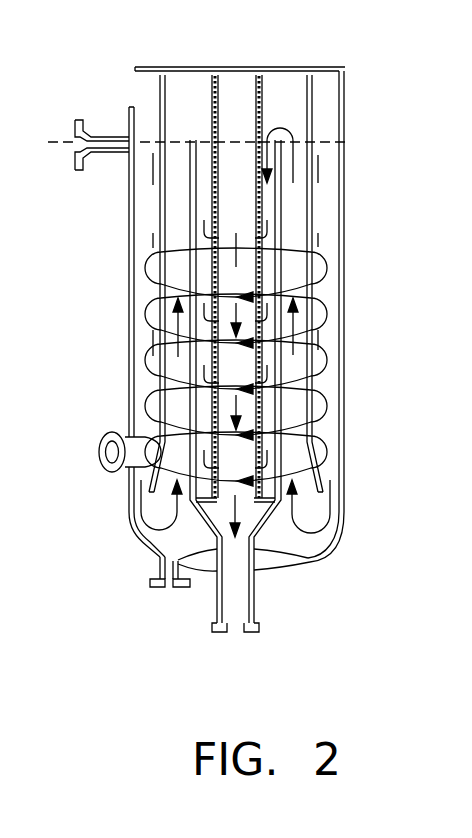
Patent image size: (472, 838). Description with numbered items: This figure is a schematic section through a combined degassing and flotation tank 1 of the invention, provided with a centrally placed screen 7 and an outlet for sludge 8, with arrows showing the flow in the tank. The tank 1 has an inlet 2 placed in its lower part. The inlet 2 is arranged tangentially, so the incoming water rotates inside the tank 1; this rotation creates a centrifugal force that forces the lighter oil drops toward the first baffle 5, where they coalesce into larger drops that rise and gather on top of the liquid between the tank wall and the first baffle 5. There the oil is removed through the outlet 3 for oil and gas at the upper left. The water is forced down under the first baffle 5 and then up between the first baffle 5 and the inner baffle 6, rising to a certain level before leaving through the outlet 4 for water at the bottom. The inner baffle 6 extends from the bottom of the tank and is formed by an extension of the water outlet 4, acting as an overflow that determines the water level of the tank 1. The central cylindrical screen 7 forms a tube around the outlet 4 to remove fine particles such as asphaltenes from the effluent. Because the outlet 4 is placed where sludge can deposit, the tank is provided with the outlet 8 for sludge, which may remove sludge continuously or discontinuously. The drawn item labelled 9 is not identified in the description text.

The tank 1 is at (344, 305).
The inlet 2 is at (76, 451).
The outlet for oil and gas 3 is at (84, 138).
The outlet for water 4 is at (235, 634).
The first baffle 5 is at (312, 104).
The inner baffle 6 is at (283, 200).
The central cylindrical screen 7 is at (262, 97).
The outlet for sludge 8 is at (170, 588).
The heating coil 9 is at (246, 108).